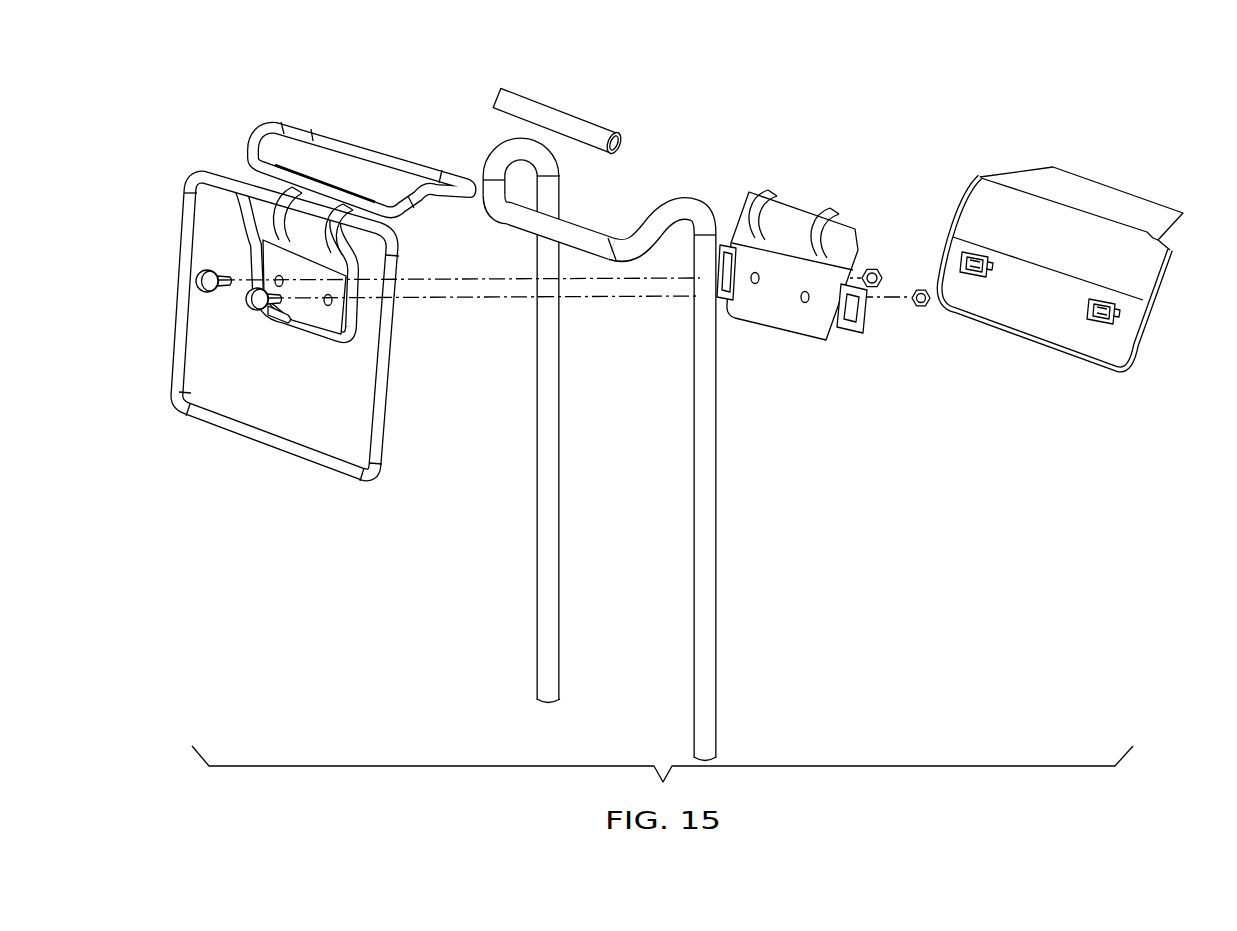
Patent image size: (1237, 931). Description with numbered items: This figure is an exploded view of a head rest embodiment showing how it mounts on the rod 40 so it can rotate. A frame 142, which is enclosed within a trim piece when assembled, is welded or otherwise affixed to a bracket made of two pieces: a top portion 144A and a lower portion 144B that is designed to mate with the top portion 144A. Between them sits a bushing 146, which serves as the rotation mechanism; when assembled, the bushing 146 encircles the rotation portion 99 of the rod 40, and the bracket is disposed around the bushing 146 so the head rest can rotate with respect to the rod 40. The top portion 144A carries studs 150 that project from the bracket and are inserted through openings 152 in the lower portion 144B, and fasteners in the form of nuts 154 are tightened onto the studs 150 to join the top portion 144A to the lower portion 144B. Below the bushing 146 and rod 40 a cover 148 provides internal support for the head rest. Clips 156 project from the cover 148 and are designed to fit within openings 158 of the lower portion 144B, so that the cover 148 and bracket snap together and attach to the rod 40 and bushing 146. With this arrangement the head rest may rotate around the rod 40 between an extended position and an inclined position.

The rod 40 is at (614, 455).
The rotation portion 99 is at (527, 214).
The frame 142 is at (185, 249).
The top portion 144A is at (316, 313).
The lower portion 144B is at (762, 291).
The bushing 146 is at (595, 128).
The cover 148 is at (1076, 277).
The studs 150 is at (211, 292).
The openings 152 is at (757, 284).
The nuts 154 is at (918, 290).
The clips 156 is at (976, 274).
The openings 158 is at (721, 284).